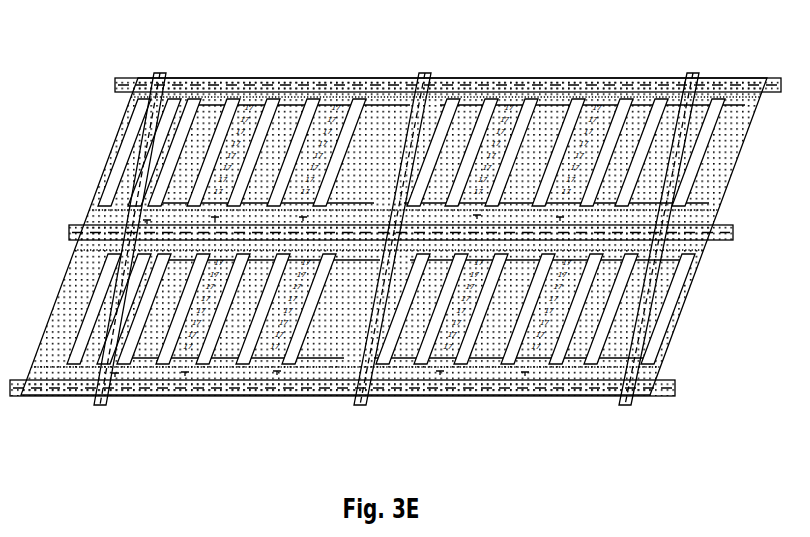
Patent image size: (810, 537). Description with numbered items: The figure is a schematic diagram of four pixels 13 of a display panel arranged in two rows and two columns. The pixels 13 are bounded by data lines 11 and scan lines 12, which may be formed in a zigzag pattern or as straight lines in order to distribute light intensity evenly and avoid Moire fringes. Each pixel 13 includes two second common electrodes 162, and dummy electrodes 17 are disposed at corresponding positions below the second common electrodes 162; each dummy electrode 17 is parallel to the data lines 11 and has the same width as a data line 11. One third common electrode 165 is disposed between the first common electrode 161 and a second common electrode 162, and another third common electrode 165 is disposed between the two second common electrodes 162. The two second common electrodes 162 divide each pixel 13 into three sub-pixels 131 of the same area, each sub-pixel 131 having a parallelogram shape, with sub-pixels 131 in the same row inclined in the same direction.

The data line 11 is at (687, 77).
The scan line 12 is at (771, 84).
The pixel 13 is at (193, 76).
The dummy electrode 17 is at (247, 100).
The sub-pixel 131 is at (331, 97).
The first common electrode 161 is at (156, 100).
The second common electrode 162 is at (503, 97).
The third common electrode 165 is at (291, 108).